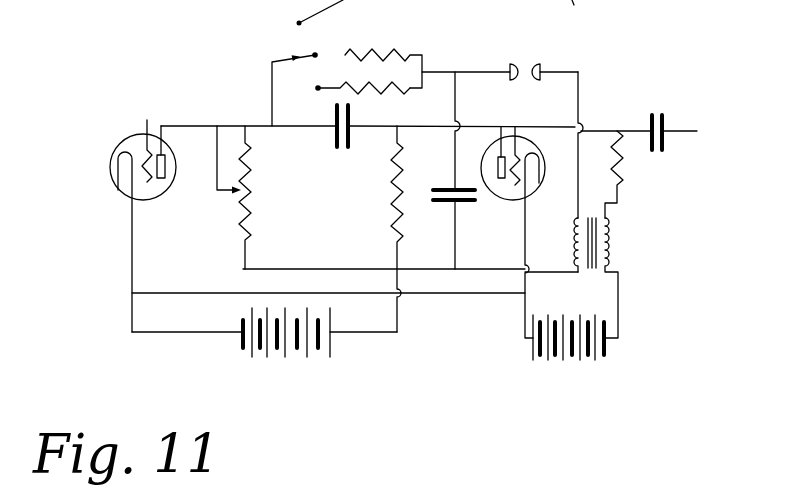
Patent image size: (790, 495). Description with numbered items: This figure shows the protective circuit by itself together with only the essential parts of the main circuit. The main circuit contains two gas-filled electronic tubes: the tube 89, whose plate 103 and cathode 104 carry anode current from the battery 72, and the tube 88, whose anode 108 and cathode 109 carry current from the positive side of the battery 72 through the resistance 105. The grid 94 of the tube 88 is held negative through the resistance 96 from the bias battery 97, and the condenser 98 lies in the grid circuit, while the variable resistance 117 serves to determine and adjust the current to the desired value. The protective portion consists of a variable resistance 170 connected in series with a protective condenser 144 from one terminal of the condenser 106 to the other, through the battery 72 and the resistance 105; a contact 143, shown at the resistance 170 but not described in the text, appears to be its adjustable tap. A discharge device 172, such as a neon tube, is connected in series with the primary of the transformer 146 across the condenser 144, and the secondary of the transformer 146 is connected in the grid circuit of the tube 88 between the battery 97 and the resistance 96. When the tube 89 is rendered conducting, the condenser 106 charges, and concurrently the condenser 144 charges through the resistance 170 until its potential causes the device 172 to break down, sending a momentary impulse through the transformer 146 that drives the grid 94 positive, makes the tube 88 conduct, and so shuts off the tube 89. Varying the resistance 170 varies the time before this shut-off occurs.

The switch 143 is at (272, 62).
The variable resistance 170 is at (397, 50).
The discharge device 172 is at (522, 63).
The condenser 98 is at (667, 125).
The condenser 106 is at (347, 150).
The cathode 104 is at (130, 188).
The electronic tube 89 is at (113, 153).
The plate 103 is at (163, 177).
The variable resistance 117 is at (251, 201).
The resistance 105 is at (392, 208).
The protective condenser 144 is at (448, 184).
The battery 72 is at (293, 347).
The electronic tube 88 is at (540, 187).
The anode 108 is at (498, 177).
The grid 94 is at (517, 150).
The cathode 109 is at (528, 207).
The resistance 96 is at (623, 163).
The transformer 146 is at (612, 240).
The battery 97 is at (572, 360).